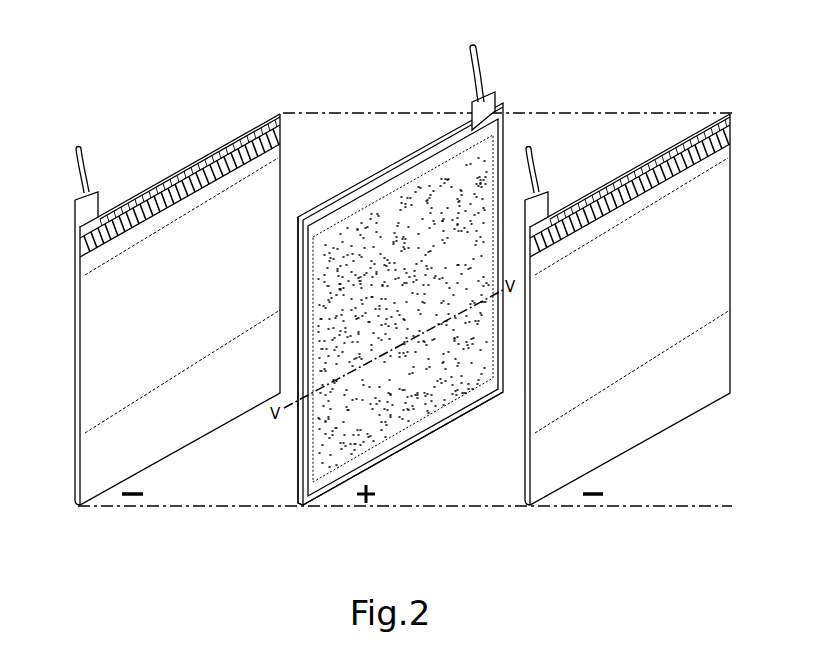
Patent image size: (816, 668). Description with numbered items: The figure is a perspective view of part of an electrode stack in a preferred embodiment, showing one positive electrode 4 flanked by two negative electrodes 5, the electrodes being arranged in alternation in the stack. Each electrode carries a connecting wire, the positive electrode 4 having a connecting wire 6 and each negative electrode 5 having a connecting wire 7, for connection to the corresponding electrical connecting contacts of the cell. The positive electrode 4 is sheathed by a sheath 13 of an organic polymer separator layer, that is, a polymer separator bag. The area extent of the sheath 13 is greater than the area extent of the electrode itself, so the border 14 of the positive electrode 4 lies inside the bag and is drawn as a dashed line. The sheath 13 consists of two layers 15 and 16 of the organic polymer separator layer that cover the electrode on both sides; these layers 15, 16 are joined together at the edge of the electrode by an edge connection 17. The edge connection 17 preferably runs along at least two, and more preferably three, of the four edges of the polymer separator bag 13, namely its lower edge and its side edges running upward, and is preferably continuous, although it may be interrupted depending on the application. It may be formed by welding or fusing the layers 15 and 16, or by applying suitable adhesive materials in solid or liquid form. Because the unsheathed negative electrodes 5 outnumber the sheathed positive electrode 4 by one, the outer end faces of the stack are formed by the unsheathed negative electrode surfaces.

The positive electrode 4 is at (367, 323).
The negative electrode 5 is at (382, 309).
The connecting wire 6 is at (492, 66).
The connecting wire 7 is at (334, 184).
The sheath 13 is at (337, 450).
The border 14 is at (307, 461).
The layer 15 is at (374, 424).
The layer 16 is at (336, 191).
The edge connection 17 is at (424, 432).